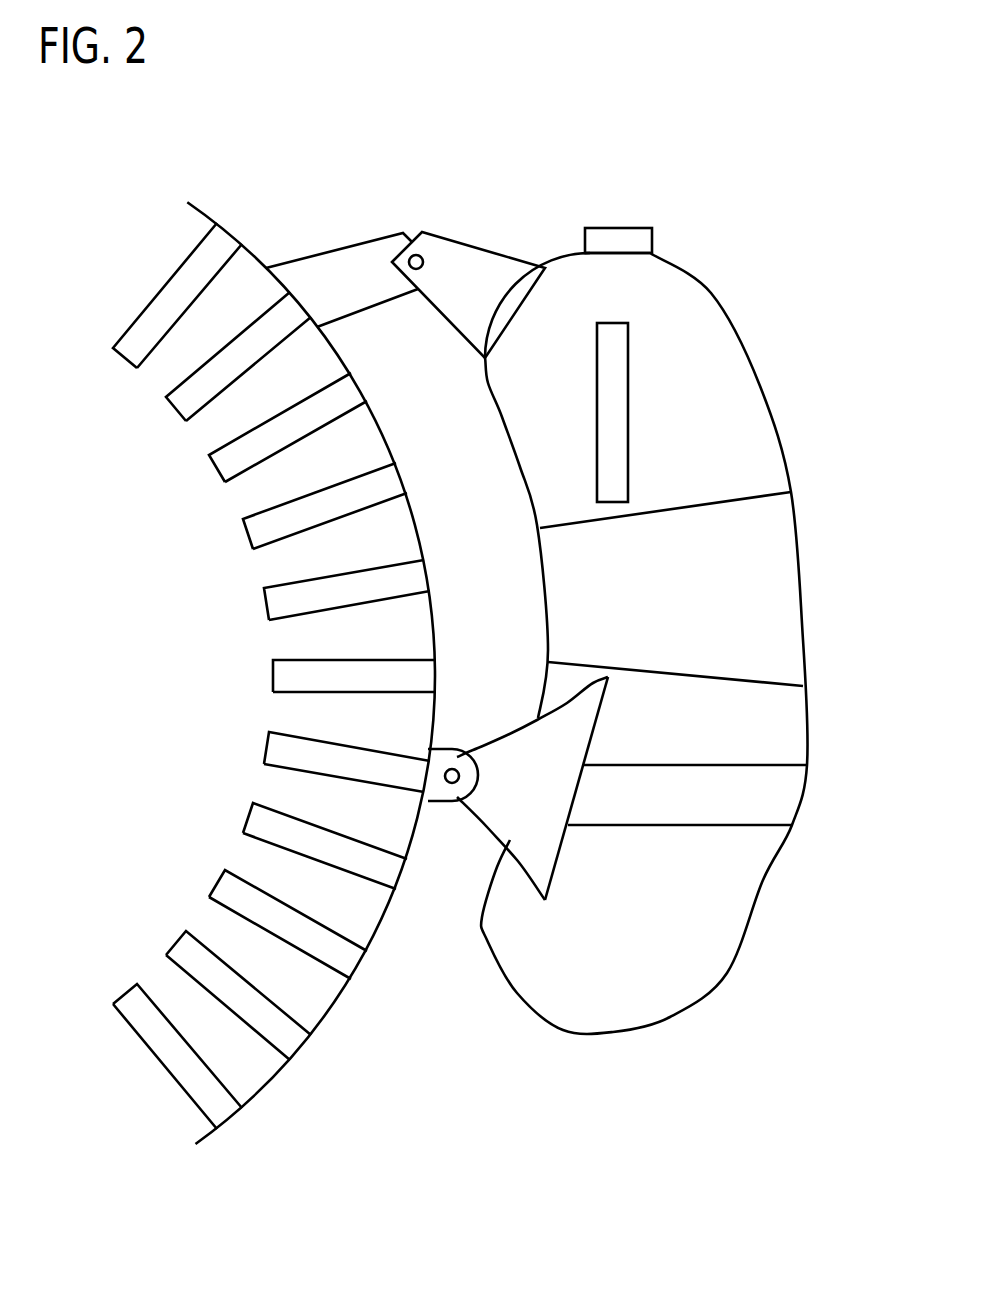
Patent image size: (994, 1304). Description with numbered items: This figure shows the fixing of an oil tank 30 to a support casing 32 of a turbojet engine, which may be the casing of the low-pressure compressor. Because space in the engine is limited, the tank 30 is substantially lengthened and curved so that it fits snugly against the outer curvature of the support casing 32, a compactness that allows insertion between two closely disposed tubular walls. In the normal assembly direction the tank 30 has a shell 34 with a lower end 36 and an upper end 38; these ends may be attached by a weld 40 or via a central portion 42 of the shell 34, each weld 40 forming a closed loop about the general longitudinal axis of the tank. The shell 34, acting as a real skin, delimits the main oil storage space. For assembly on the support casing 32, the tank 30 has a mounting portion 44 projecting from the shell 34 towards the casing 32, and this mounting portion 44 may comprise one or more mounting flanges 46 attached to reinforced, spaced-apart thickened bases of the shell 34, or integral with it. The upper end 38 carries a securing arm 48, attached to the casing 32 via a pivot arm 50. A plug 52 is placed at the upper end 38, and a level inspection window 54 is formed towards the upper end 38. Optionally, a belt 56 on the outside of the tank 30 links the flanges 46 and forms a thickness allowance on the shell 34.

The oil tank 30 is at (737, 230).
The support casing 32 is at (244, 247).
The shell 34 is at (509, 1057).
The lower end 36 is at (641, 946).
The upper end 38 is at (713, 442).
The weld 40 is at (667, 512).
The central portion 42 is at (771, 647).
The mounting portion 44 is at (516, 196).
The mounting flange 46 is at (536, 801).
The securing arm 48 is at (469, 292).
The pivot arm 50 is at (360, 294).
The plug 52 is at (617, 240).
The level inspection window 54 is at (608, 373).
The belt 56 is at (703, 814).